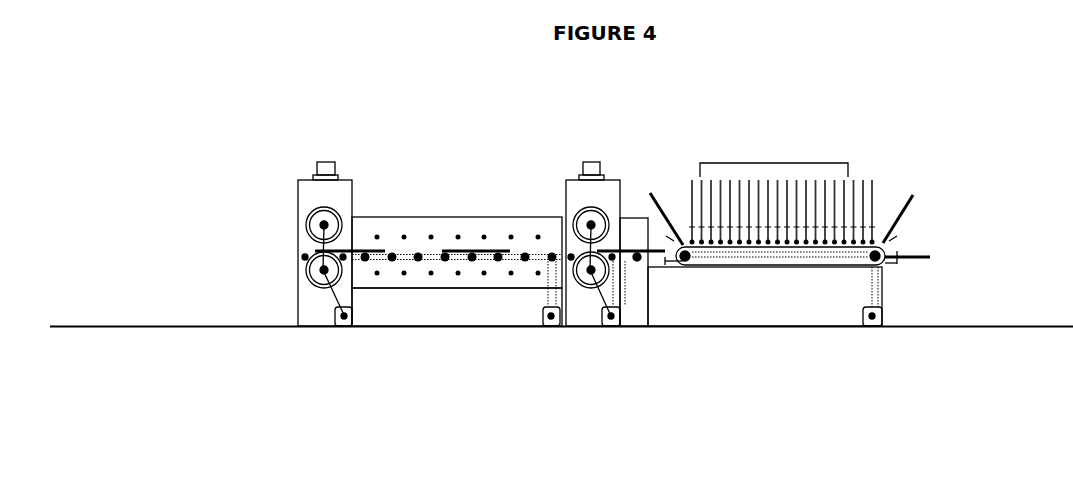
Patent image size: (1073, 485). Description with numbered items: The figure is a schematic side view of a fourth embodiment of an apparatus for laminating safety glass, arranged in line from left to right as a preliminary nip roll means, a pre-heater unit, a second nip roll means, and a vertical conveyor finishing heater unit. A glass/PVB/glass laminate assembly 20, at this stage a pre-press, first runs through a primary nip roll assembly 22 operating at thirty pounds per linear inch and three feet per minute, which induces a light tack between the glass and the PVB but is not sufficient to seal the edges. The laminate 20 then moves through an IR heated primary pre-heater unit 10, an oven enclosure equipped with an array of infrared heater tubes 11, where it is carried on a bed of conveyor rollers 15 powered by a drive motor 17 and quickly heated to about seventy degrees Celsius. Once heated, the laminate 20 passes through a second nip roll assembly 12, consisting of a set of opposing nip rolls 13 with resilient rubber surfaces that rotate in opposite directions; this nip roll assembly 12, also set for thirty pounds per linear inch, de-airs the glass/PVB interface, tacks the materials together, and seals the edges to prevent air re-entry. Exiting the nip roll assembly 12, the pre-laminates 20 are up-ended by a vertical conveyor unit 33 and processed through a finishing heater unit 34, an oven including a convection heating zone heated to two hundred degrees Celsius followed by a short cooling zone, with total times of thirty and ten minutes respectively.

The pre-heater unit 10 is at (457, 306).
The infrared heater tubes 11 is at (457, 217).
The nip roll means 12 is at (575, 158).
The nip rolls 13 is at (382, 210).
The conveyor rollers 15 is at (527, 263).
The drive motor 17 is at (553, 329).
The glass/PVB/glass assembly 20 is at (455, 248).
The primary nip roll assembly 22 is at (288, 170).
The vertical conveyor unit 33 is at (765, 256).
The finishing heater unit 34 is at (781, 164).